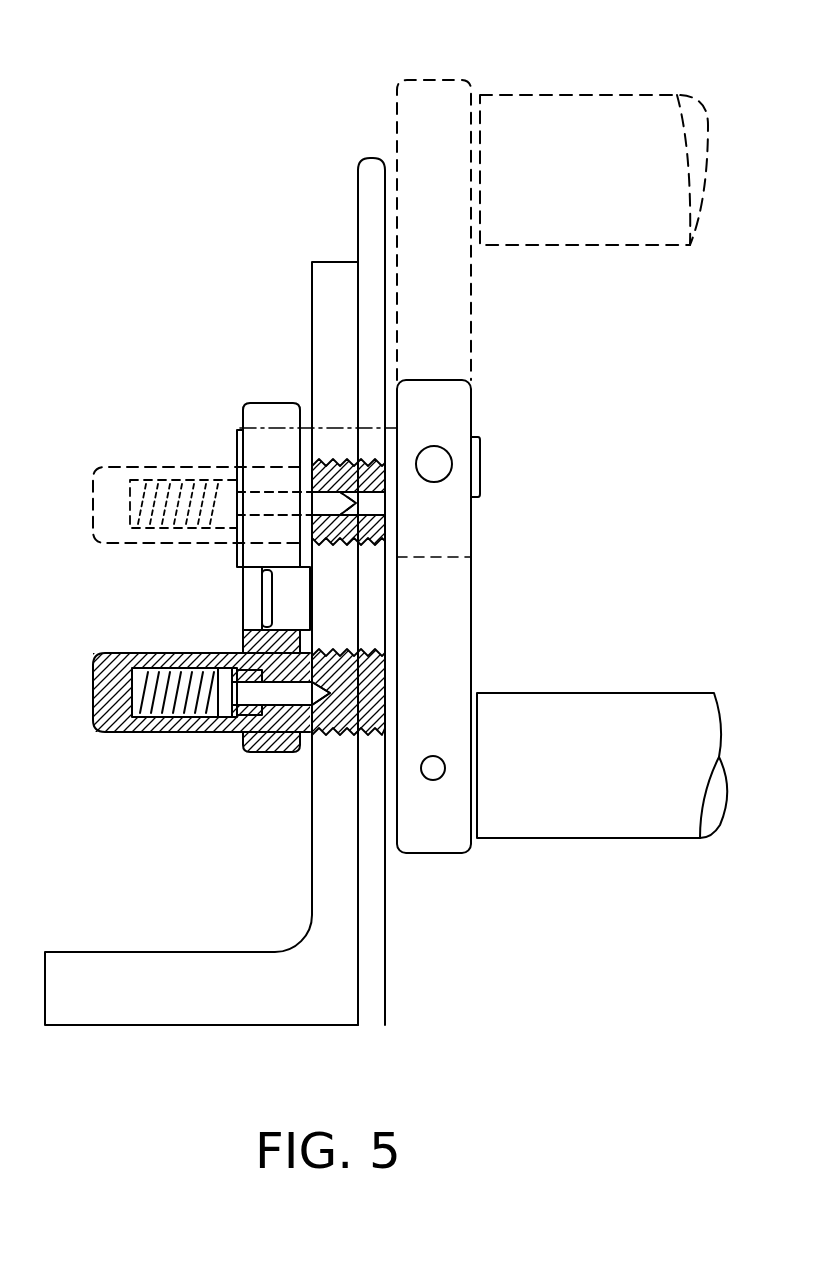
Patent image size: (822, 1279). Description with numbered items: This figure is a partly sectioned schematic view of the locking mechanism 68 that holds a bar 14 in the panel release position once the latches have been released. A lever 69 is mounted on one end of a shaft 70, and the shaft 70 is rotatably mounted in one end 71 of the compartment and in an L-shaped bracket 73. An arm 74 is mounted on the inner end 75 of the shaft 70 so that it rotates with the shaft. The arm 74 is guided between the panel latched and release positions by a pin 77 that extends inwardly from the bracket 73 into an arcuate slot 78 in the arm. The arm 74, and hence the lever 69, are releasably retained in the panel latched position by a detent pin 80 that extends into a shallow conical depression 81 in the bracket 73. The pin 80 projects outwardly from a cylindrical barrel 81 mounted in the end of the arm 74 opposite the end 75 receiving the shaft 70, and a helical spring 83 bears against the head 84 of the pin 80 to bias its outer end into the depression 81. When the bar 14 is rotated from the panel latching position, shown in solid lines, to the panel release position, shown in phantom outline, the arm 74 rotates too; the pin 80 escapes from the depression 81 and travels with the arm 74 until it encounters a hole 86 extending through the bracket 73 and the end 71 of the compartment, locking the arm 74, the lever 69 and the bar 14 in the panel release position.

The locking mechanism 68 is at (186, 250).
The bar 14 is at (592, 115).
The lever 69 is at (452, 618).
The shaft 70 is at (480, 465).
The end of the compartment 71 is at (373, 168).
The L-shaped bracket 73 is at (338, 278).
The arm 74 is at (285, 405).
The inner end of the shaft 75 is at (245, 410).
The pin 77 is at (287, 597).
The arcuate slot 78 is at (250, 610).
The detent pin 80 is at (277, 695).
The cylindrical barrel 81 is at (105, 490).
The helical spring 83 is at (178, 492).
The head of the pin 84 is at (223, 710).
The hole 86 is at (373, 509).